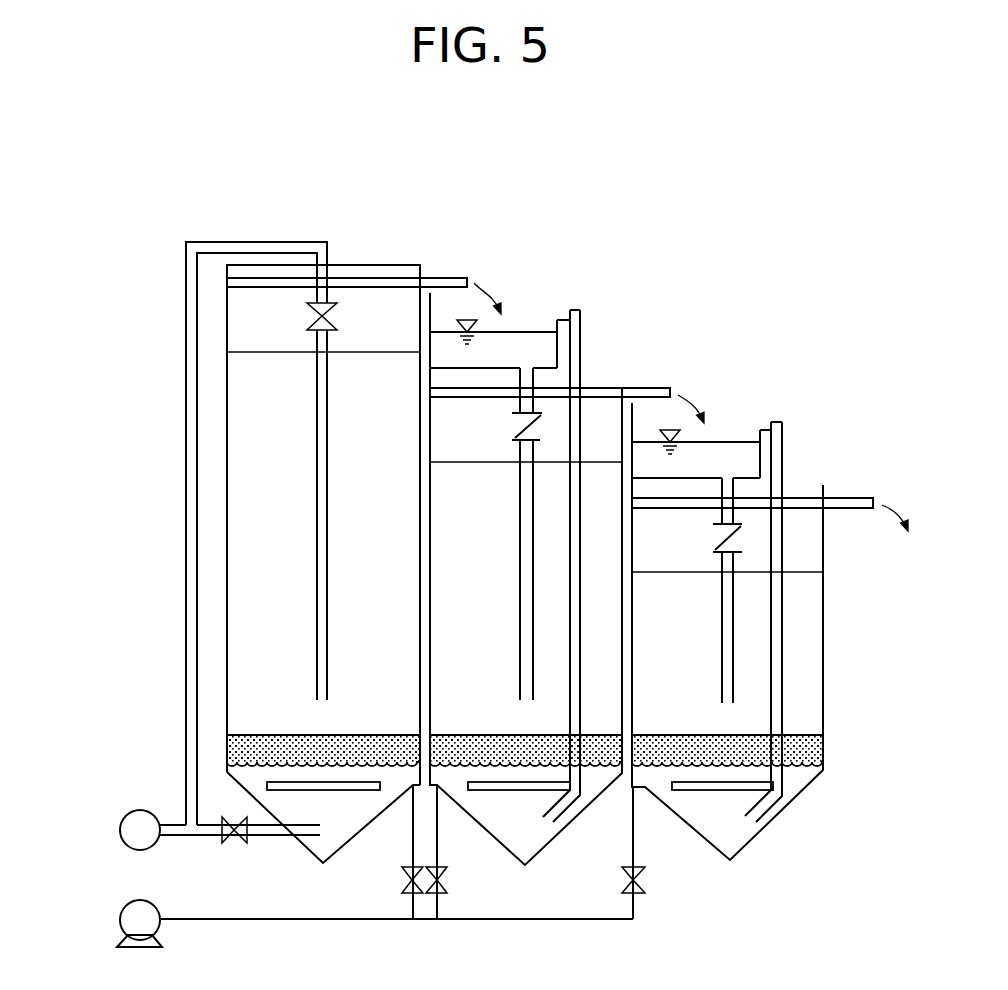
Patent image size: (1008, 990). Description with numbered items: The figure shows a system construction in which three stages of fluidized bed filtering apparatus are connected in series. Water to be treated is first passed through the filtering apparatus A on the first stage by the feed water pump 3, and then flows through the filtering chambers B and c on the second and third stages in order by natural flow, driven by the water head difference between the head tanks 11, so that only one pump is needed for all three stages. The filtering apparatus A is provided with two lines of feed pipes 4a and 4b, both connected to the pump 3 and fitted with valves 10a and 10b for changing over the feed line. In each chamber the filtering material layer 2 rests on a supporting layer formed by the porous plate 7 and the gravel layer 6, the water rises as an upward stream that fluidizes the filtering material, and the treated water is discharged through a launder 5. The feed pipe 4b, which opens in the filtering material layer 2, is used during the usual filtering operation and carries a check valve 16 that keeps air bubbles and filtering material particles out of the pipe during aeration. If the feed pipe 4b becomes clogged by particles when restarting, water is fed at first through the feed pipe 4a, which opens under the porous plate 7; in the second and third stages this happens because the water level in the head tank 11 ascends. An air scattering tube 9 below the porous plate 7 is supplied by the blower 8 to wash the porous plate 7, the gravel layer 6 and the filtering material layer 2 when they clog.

The filtering material layer 2 is at (810, 657).
The feed water pump 3 is at (120, 830).
The first feed pipe 4a is at (570, 308).
The second feed pipe 4b is at (252, 242).
The launder 5 is at (467, 276).
The gravel layer 6 is at (817, 752).
The porous plate 7 is at (817, 773).
The blower 8 is at (120, 920).
The air scattering tube 9 is at (340, 796).
The valve 10a is at (231, 845).
The valve 10b is at (328, 317).
The head tank 11 is at (560, 306).
The check valve 16 is at (535, 424).
The filtering apparatus on the first stage A is at (207, 325).
The filtering chamber on the second stage B is at (636, 375).
The filtering chamber on the third stage c is at (836, 593).